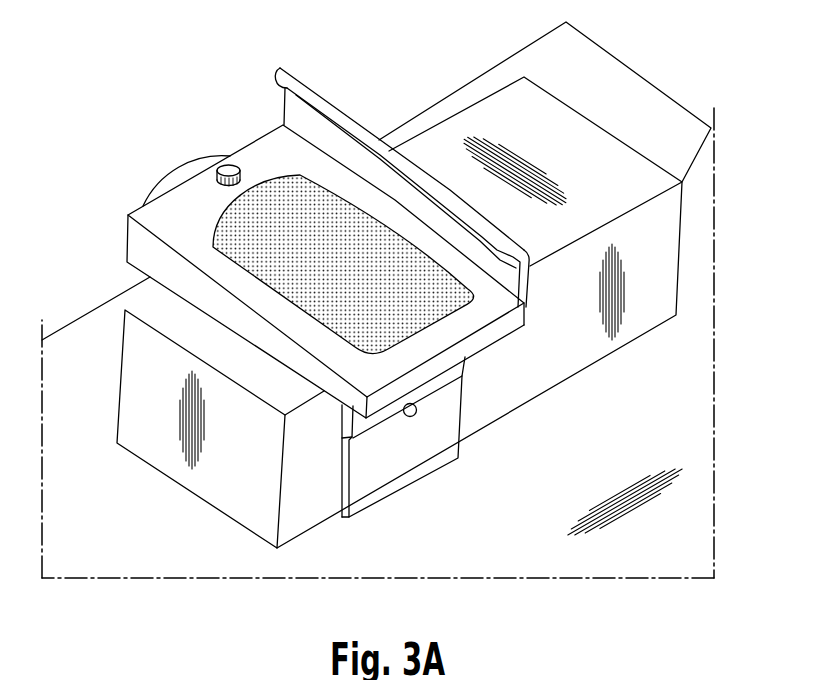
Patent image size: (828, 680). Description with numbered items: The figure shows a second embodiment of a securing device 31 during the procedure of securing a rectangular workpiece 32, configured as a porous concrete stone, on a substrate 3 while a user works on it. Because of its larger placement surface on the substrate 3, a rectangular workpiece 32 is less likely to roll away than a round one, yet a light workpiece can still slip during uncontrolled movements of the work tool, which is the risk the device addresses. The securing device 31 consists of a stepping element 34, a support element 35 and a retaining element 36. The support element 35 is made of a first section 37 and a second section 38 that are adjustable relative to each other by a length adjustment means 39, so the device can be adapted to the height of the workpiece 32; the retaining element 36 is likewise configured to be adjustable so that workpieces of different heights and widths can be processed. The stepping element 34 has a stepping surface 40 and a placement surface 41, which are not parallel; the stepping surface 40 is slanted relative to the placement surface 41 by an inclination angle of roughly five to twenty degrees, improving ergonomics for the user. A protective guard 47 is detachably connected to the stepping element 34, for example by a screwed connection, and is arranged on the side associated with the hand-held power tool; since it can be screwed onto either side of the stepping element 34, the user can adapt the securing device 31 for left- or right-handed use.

The substrate 3 is at (77, 358).
The securing device 31 is at (374, 90).
The workpiece 32 is at (659, 248).
The stepping element 34 is at (488, 338).
The support element 35 is at (434, 488).
The retaining element 36 is at (136, 165).
The first section 37 is at (438, 383).
The second section 38 is at (427, 445).
The length adjustment means 39 is at (405, 418).
The stepping surface 40 is at (278, 250).
The placement surface 41 is at (333, 400).
The protective guard 47 is at (426, 183).